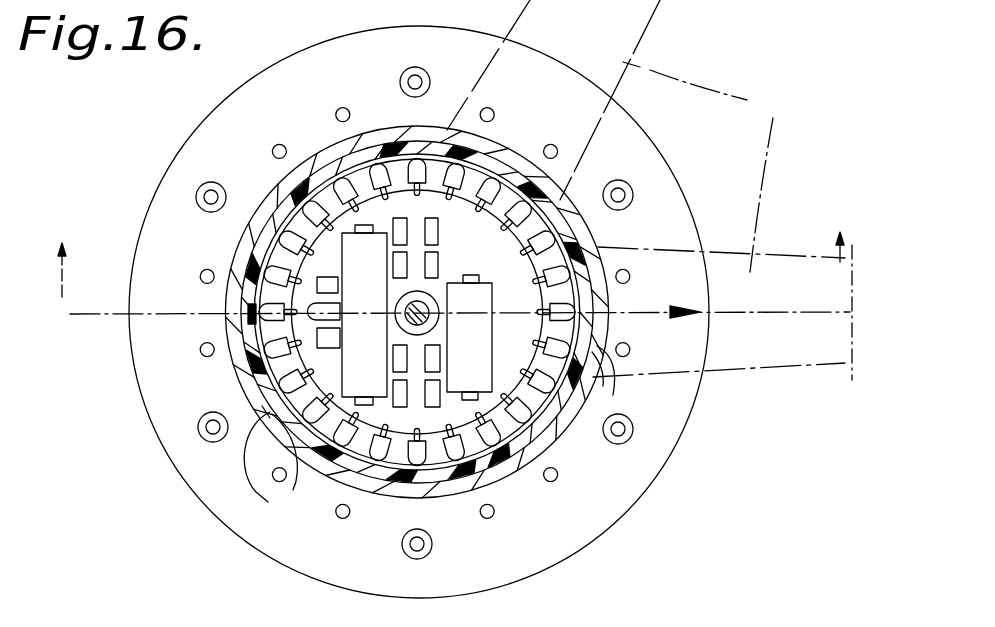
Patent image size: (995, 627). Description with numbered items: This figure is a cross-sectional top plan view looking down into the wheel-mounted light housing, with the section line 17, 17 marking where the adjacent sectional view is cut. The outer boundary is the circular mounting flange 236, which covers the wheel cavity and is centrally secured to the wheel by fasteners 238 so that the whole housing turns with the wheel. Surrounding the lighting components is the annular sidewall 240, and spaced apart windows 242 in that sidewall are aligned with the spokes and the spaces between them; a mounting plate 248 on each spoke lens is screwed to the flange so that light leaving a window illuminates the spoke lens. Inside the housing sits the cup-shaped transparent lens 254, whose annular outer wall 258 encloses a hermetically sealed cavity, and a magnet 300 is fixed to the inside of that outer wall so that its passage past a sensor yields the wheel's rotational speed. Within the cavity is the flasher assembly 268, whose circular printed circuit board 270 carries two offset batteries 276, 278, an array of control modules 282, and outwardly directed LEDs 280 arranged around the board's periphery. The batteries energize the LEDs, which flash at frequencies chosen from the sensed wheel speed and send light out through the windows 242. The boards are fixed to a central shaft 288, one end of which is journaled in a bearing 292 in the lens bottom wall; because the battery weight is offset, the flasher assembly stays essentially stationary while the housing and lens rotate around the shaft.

The section line 17— 17 is at (446, 306).
The circular mounting flange 236 is at (155, 377).
The fasteners 238 is at (209, 197).
The annular sidewall 240 is at (606, 261).
The windows 242 is at (402, 488).
The mounting plates 248 is at (720, 167).
The cup-shaped transparent lens 254 is at (261, 386).
The annular outer wall 258 is at (243, 408).
The flasher assembly 268 is at (498, 413).
The printed circuit board 270 is at (438, 417).
The battery 276 is at (380, 316).
The battery 278 is at (490, 325).
The LEDs 280 is at (522, 408).
The control modules 282 is at (410, 218).
The shaft 288 is at (432, 303).
The bearing 292 is at (438, 325).
The magnet 300 is at (252, 313).